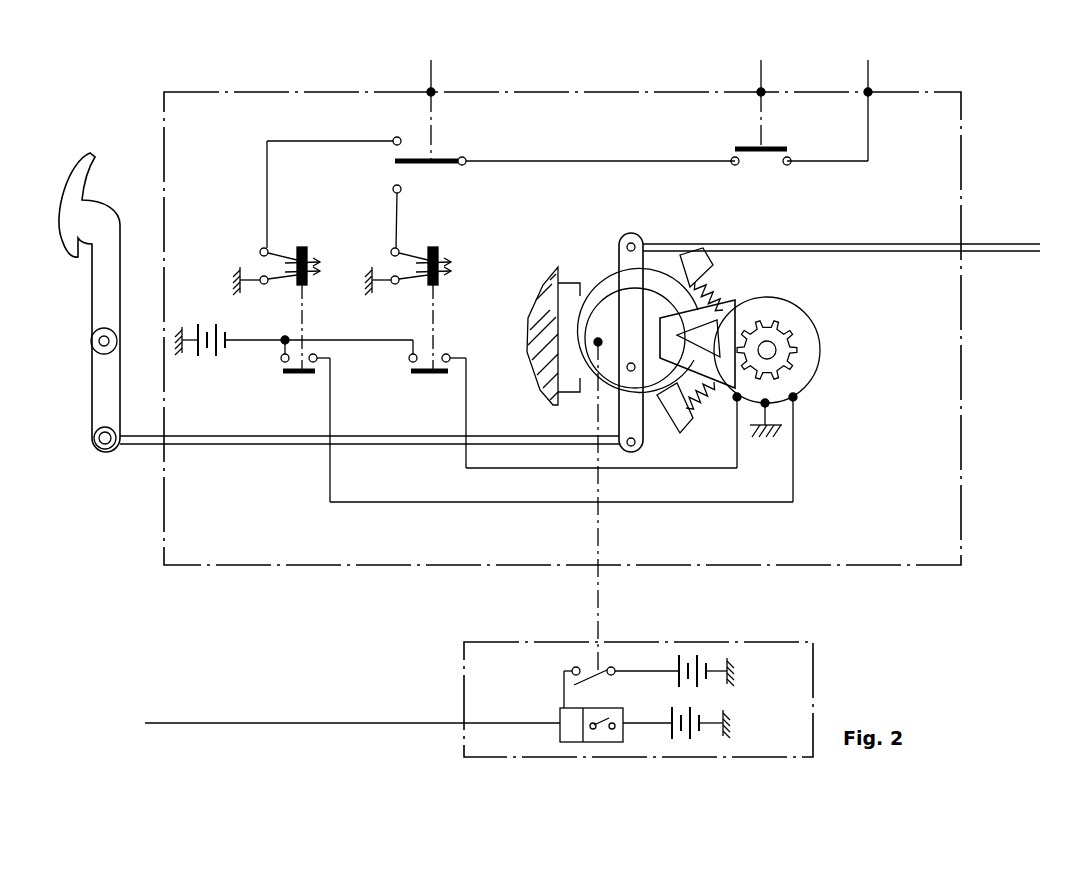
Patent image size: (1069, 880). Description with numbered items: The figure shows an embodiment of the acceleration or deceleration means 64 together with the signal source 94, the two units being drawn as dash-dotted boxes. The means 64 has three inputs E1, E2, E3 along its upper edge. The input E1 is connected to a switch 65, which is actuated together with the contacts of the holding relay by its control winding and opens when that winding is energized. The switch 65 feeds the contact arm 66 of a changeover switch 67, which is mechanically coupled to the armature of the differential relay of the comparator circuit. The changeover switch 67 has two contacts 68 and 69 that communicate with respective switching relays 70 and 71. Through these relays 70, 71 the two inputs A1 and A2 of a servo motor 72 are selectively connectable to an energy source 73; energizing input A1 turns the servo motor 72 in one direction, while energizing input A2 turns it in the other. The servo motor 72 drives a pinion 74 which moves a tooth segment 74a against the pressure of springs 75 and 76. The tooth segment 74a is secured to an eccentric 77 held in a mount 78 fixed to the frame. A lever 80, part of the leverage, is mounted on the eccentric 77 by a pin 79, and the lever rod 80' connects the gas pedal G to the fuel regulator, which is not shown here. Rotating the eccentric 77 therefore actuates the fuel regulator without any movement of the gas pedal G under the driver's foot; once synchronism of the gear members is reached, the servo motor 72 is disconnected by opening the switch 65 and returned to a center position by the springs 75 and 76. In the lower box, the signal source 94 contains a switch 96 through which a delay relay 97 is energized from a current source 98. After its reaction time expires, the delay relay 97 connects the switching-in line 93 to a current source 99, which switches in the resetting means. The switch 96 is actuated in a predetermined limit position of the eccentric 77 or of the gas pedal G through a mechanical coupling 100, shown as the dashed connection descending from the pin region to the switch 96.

The acceleration or deceleration means 64 is at (257, 81).
The gas pedal G is at (106, 218).
The input E1 is at (845, 109).
The input E2 is at (447, 109).
The input E3 is at (777, 103).
The switch 65 is at (748, 168).
The contact arm 66 is at (425, 168).
The changeover switch 67 is at (450, 157).
The contact 68 is at (396, 137).
The contact 69 is at (393, 190).
The switching relay 70 is at (260, 250).
The switching relay 71 is at (391, 250).
The servo motor 72 is at (820, 325).
The energy source 73 is at (216, 360).
The pinion 74 is at (785, 325).
The tooth segment 74a is at (737, 302).
The spring 75 is at (724, 272).
The spring 76 is at (712, 428).
The eccentric 77 is at (592, 300).
The mount 78 is at (628, 285).
The pin 79 is at (628, 368).
The lever 80 is at (406, 323).
The lever rod 80' is at (841, 235).
The switching-in line 93 is at (316, 721).
The signal source 94 is at (814, 652).
The switch 96 is at (600, 670).
The delay relay 97 is at (558, 716).
The current source 98 is at (708, 664).
The current source 99 is at (706, 712).
The mechanical coupling 100 is at (594, 613).
The input A1 is at (796, 399).
The input A2 is at (735, 400).